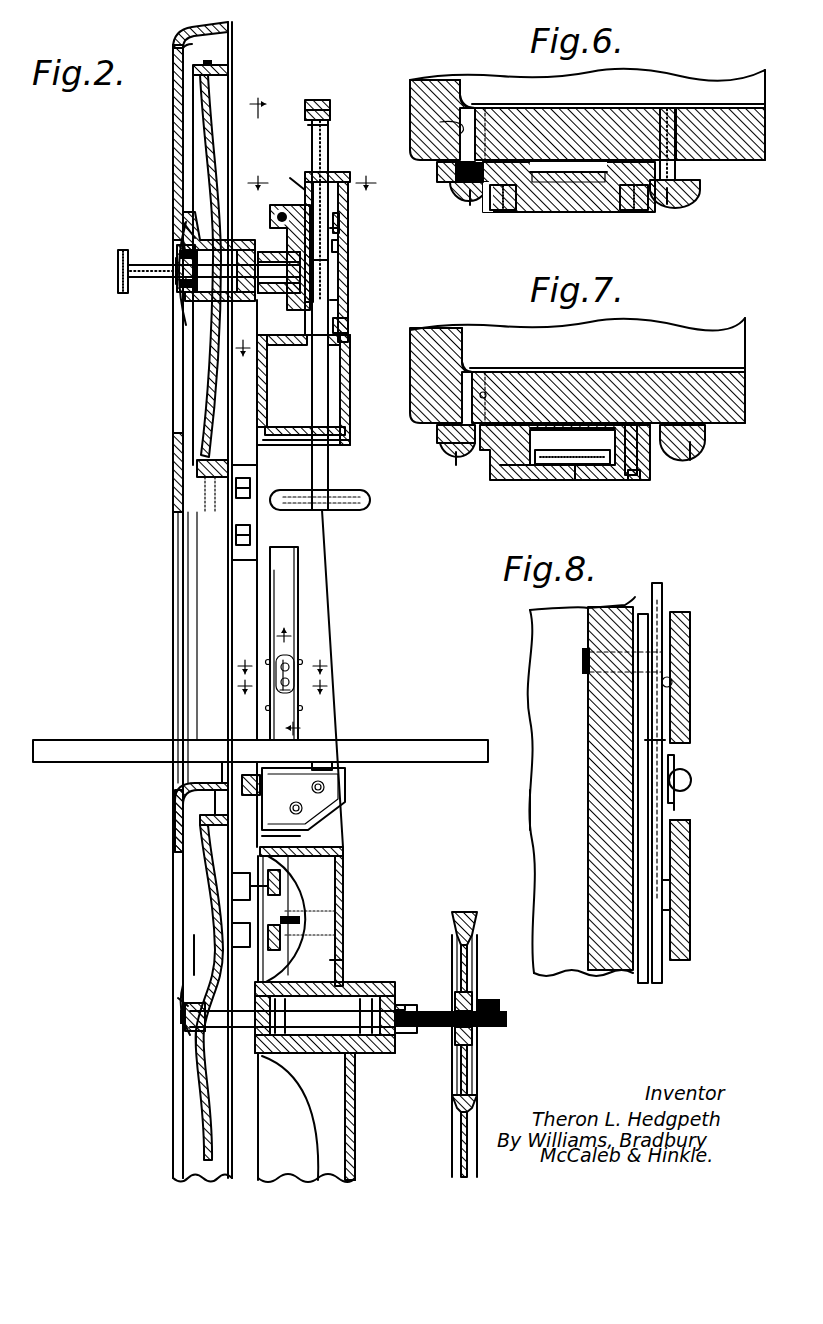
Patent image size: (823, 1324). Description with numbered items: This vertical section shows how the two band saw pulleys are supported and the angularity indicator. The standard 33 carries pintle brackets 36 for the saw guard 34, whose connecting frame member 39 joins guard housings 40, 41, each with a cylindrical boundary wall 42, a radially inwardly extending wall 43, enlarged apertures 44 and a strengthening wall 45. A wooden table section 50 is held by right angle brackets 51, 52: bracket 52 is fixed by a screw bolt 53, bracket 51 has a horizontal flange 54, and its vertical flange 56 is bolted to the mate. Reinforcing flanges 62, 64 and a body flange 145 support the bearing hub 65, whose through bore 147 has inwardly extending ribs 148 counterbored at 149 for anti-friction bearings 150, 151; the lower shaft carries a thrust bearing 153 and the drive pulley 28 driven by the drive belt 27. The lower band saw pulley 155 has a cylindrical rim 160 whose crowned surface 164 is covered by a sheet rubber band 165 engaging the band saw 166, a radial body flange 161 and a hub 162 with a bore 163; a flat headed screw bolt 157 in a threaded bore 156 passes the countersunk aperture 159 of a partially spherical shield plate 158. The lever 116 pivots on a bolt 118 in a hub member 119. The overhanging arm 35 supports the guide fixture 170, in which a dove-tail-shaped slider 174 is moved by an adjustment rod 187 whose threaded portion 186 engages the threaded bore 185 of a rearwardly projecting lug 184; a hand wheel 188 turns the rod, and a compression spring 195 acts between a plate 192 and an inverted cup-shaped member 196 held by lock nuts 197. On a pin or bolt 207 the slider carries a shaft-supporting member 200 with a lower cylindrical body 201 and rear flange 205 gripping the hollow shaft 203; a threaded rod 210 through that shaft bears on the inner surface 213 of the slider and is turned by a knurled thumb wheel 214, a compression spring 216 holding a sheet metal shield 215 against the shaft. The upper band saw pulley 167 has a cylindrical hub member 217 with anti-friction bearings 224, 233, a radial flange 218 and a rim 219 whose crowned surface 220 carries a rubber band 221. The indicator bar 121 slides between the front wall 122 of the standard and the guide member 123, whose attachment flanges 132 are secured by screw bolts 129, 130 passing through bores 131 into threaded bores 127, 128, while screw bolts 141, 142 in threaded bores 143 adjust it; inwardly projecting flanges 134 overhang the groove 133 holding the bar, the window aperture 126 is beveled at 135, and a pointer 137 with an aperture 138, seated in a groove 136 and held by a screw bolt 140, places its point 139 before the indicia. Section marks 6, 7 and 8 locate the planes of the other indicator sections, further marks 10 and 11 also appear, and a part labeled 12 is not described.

In FIG. 2, the cylindrical boundary wall 42 is at (215, 24).
In FIG. 2, the radially inwardly extending wall 43 is at (173, 86).
In FIG. 2, the enlarged apertures 44 is at (173, 116).
In FIG. 2, the resilient band of rubber 221 is at (185, 48).
In FIG. 2, the crowned surface 220 is at (212, 62).
In FIG. 2, the rim 219 is at (228, 72).
In FIG. 2, the radial flange 218 is at (208, 155).
In FIG. 2, the cylindrical hub member 217 is at (198, 210).
In FIG. 2, the anti-friction bearing 233 is at (190, 244).
In FIG. 2, the threaded rod 210 is at (177, 266).
In FIG. 2, the knurled thumb wheel 214 is at (118, 266).
In FIG. 2, the compression spring 216 is at (145, 280).
In FIG. 2, the partially spherical sheet metal shield 215 is at (168, 298).
In FIG. 2, the hollow shaft 203 is at (183, 318).
In FIG. 2, the pin or bolt 207 is at (272, 208).
In FIG. 2, the shaft-supporting member 200 is at (265, 250).
In FIG. 2, the rear bearing 224 is at (264, 296).
In FIG. 2, the lower cylindrical body 201 is at (288, 294).
In FIG. 2, the lock nuts 197 is at (324, 100).
In FIG. 2, the inverted cup-shaped member 196 is at (326, 118).
In FIG. 2, the compression spring 195 is at (326, 135).
In FIG. 2, the plate 192 is at (328, 180).
In FIG. 2, the dove-tail-shaped slider 174 is at (295, 178).
In FIG. 2, the rearwardly projecting lug 184 is at (345, 215).
In FIG. 2, the threaded bore 185 is at (345, 228).
In FIG. 2, the threaded portion 186 is at (342, 245).
In FIG. 2, the flange 205 is at (330, 260).
In FIG. 2, the guide fixture 170 is at (350, 285).
In FIG. 2, the adjustment rod 187 is at (340, 300).
In FIG. 2, the inner surface 213 is at (340, 318).
In FIG. 2, the over-hanging arm 35 is at (345, 385).
In FIG. 2, the hand wheel 188 is at (370, 512).
In FIG. 2, the pintle brackets 36 is at (232, 520).
In FIG. 2, the connecting frame member 39 is at (205, 595).
In FIG. 2, the saw guard 34 is at (183, 642).
In FIG. 2, the guard housing 41 is at (190, 398).
In FIG. 2, the upper band saw pulley 167 is at (200, 345).
In FIG. 2, the guide member 123 is at (290, 592).
In FIG. 6, the guide member 123 is at (548, 212).
In FIG. 8, the guide member 123 is at (690, 950).
In FIG. 2, the standard 33 is at (322, 625).
In FIG. 8, the standard 33 is at (545, 812).
In FIG. 2, the attachment flanges 132 is at (300, 660).
In FIG. 6, the attachment flanges 132 is at (700, 160).
In FIG. 2, the pointer 137 is at (300, 685).
In FIG. 7, the pointer 137 is at (630, 430).
In FIG. 8, the pointer 137 is at (672, 765).
In FIG. 2, the window aperture 126 is at (283, 670).
In FIG. 7, the window aperture 126 is at (560, 470).
In FIG. 8, the window aperture 126 is at (690, 708).
In FIG. 2, the horizontal flange 54 is at (335, 768).
In FIG. 2, the wall 45 is at (220, 783).
In FIG. 2, the wooden table section 50 is at (377, 744).
In FIG. 2, the right angle bracket 51 is at (270, 778).
In FIG. 2, the right angle bracket 52 is at (318, 803).
In FIG. 2, the screw bolt 53 is at (325, 787).
In FIG. 2, the vertical flange 56 is at (312, 830).
In FIG. 2, the band saw 166 is at (225, 778).
In FIG. 2, the sheet rubber band 165 is at (215, 808).
In FIG. 2, the crowned surface 164 is at (205, 814).
In FIG. 2, the cylindrical rim 160 is at (200, 820).
In FIG. 2, the radial body flange 161 is at (235, 905).
In FIG. 2, the lower band saw pulley 155 is at (200, 955).
In FIG. 2, the partially spherical shield plate 158 is at (180, 990).
In FIG. 2, the countersunk aperture 159 is at (175, 998).
In FIG. 2, the threaded bore 156 is at (185, 1014).
In FIG. 2, the flat headed screw bolt 157 is at (185, 1022).
In FIG. 2, the bore 163 is at (180, 1040).
In FIG. 2, the guard housing 40 is at (195, 1120).
In FIG. 2, the reinforcing flange 62 is at (310, 895).
In FIG. 2, the body flange 145 is at (343, 925).
In FIG. 2, the bolt 118 is at (280, 905).
In FIG. 2, the hub member 119 is at (298, 922).
In FIG. 2, the lever 116 is at (292, 940).
In FIG. 2, the anti-friction bearing 150 is at (340, 955).
In FIG. 2, the bearing hub 65 is at (318, 985).
In FIG. 2, the through bore 147 is at (360, 975).
In FIG. 2, the inwardly extending rib 148 is at (370, 990).
In FIG. 2, the hub 162 is at (335, 1030).
In FIG. 2, the anti-friction bearing 151 is at (370, 1055).
In FIG. 2, the counterbore 149 is at (415, 1045).
In FIG. 2, the thrust bearing 153 is at (425, 1055).
In FIG. 2, the reinforcing flange 64 is at (335, 1168).
In FIG. 2, the drive belt 27 is at (462, 912).
In FIG. 2, the drive pulley 28 is at (470, 964).
In FIG. 2, the section line 11 is at (263, 235).
In FIG. 2, the section line 10 is at (312, 173).
In FIG. 2, the section line 8— 8 is at (294, 675).
In FIG. 2, the section line 6— 6 is at (282, 658).
In FIG. 2, the section line 7— 7 is at (282, 695).
In FIG. 6, the front wall 122 is at (755, 162).
In FIG. 8, the front wall 122 is at (605, 874).
In FIG. 6, the threaded bore 127 is at (455, 118).
In FIG. 7, the threaded bore 127 is at (545, 420).
In FIG. 6, the threaded bores 143 is at (440, 175).
In FIG. 6, the screw bolt 141 is at (465, 205).
In FIG. 6, the indicator bar 121 is at (515, 214).
In FIG. 7, the indicator bar 121 is at (580, 480).
In FIG. 8, the indicator bar 121 is at (655, 978).
In FIG. 6, the bores 131 is at (508, 160).
In FIG. 6, the inwardly projecting flanges 134 is at (548, 165).
In FIG. 7, the inwardly projecting flanges 134 is at (548, 370).
In FIG. 8, the inwardly projecting flanges 134 is at (665, 740).
In FIG. 6, the groove 133 is at (580, 172).
In FIG. 7, the groove 133 is at (490, 458).
In FIG. 8, the groove 133 is at (670, 688).
In FIG. 6, the threaded bore 128 is at (660, 160).
In FIG. 6, the screw bolt 130 is at (668, 203).
In FIG. 8, the screw bolt 130 is at (690, 642).
In FIG. 7, the frame 12 is at (725, 402).
In FIG. 7, the point 139 is at (575, 440).
In FIG. 8, the point 139 is at (676, 800).
In FIG. 7, the aperture 138 is at (680, 430).
In FIG. 7, the screw bolt 129 is at (452, 462).
In FIG. 7, the outward bevel 135 is at (515, 470).
In FIG. 8, the outward bevel 135 is at (690, 862).
In FIG. 7, the screw bolt 140 is at (635, 480).
In FIG. 8, the screw bolt 140 is at (692, 782).
In FIG. 7, the groove 136 is at (655, 465).
In FIG. 8, the groove 136 is at (688, 830).
In FIG. 7, the screw bolt 142 is at (690, 460).
In FIG. 8, the screw bolt 142 is at (692, 898).